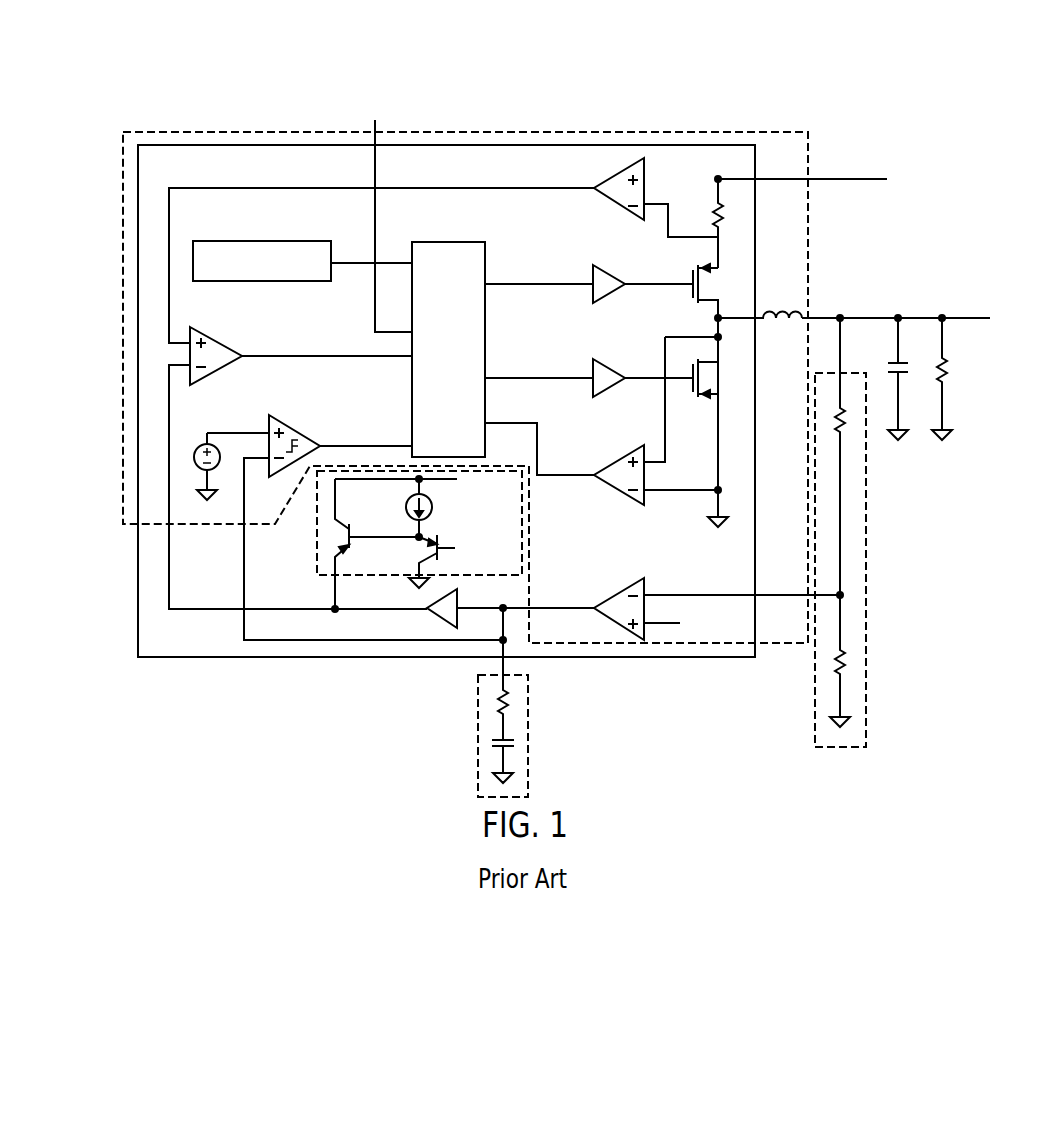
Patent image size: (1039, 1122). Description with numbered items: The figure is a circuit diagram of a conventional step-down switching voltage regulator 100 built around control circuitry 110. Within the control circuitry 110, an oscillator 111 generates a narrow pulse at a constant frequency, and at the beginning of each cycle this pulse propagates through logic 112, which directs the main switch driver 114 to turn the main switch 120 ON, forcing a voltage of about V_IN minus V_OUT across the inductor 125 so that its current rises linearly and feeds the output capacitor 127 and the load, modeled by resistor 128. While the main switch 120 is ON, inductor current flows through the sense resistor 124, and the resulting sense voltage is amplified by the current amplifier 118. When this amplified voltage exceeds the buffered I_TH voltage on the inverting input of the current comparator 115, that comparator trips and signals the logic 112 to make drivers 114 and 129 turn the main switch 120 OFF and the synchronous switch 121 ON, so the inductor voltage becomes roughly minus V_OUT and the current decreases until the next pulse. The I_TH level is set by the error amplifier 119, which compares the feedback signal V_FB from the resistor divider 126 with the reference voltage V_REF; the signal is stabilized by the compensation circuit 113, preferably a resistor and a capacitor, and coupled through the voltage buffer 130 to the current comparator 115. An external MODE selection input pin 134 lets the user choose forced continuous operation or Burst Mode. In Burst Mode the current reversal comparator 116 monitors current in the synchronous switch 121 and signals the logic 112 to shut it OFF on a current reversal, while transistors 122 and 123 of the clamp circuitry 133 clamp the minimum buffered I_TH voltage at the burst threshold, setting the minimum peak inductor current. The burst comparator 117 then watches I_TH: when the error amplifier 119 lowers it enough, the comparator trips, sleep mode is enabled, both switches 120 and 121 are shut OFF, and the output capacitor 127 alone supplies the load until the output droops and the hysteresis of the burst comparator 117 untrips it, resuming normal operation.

The voltage regulator 100 is at (888, 124).
The control circuitry 110 is at (661, 131).
The oscillator 111 is at (254, 240).
The logic 112 is at (448, 349).
The compensation circuit 113 is at (530, 738).
The main switch driver 114 is at (606, 275).
The current comparator 115 is at (237, 371).
The current reversal comparator 116 is at (619, 455).
The burst comparator 117 is at (269, 424).
The current amplifier 118 is at (613, 177).
The error amplifier 119 is at (610, 600).
The main switch 120 is at (715, 287).
The synchronous switch 121 is at (714, 376).
The transistor 122 is at (417, 550).
The transistor 123 is at (333, 537).
The sense resistor 124 is at (730, 218).
The inductor 125 is at (792, 308).
The resistor divider 126 is at (866, 538).
The capacitor 127 is at (890, 363).
The resistor 128 is at (956, 375).
The switch driver 129 is at (606, 370).
The voltage buffer 130 is at (447, 626).
The clamp circuitry 133 is at (313, 570).
The MODE selection input pin 134 is at (376, 214).